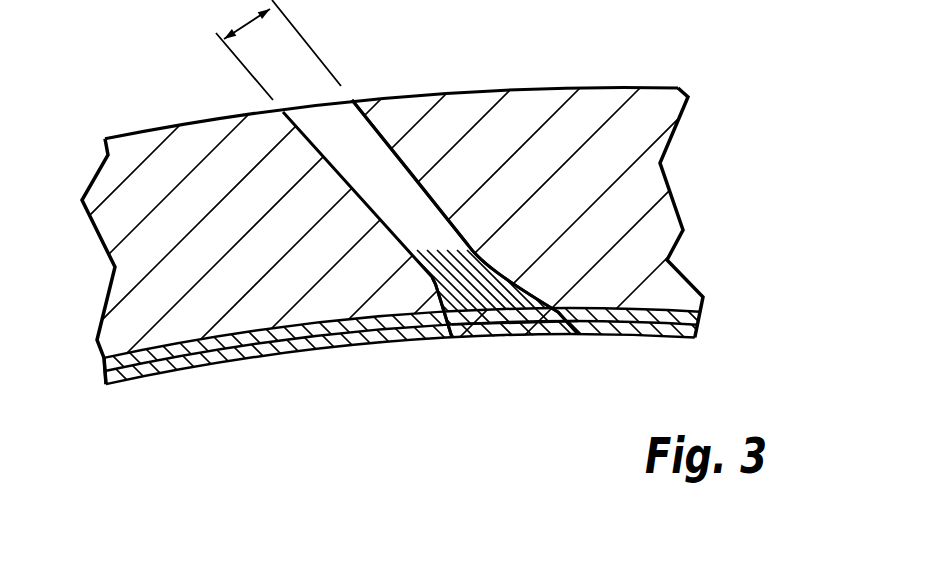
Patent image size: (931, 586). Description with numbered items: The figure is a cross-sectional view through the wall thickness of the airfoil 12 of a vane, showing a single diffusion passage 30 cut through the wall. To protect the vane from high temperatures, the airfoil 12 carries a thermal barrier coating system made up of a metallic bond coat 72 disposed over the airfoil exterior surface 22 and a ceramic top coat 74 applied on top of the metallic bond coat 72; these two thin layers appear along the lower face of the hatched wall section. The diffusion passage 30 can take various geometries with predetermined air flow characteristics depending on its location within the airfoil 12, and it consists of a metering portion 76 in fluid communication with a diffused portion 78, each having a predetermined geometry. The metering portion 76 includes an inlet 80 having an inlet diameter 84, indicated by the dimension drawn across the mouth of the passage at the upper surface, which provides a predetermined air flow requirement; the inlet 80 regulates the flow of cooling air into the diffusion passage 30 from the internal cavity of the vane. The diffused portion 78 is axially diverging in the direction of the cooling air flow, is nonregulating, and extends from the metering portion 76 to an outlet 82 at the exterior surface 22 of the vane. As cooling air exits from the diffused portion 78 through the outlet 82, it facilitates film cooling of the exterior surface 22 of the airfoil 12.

The airfoil 12 is at (597, 88).
The airfoil exterior surface 22 is at (253, 338).
The diffusion passage 30 is at (421, 204).
The metallic bond coat 72 is at (678, 307).
The ceramic top coat 74 is at (690, 328).
The metering portion 76 is at (381, 167).
The diffused portion 78 is at (468, 298).
The inlet 80 is at (338, 106).
The outlet 82 is at (518, 328).
The inlet diameter 84 is at (243, 26).